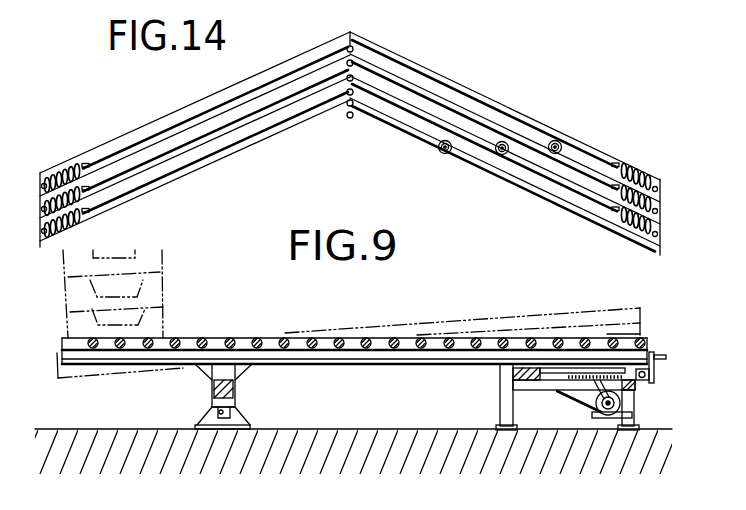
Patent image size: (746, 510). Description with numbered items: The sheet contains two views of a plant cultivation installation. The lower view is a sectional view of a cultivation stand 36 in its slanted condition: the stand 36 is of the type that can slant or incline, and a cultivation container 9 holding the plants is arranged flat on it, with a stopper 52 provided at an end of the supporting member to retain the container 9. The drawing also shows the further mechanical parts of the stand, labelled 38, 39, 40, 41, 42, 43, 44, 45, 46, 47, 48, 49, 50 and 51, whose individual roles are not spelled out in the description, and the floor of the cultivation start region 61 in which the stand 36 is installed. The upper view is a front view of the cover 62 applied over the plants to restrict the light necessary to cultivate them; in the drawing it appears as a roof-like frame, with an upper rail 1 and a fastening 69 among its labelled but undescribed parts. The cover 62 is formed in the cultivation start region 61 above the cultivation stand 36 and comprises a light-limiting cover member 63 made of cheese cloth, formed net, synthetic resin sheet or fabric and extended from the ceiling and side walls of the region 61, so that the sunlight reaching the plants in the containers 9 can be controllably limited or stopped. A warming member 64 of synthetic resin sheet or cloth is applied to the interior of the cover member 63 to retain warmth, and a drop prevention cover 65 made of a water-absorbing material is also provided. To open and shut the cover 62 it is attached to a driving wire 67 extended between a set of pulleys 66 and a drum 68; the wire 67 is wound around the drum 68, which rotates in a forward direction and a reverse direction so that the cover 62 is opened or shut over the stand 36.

In FIG. 14, the upper rail of hook frame 1 is at (428, 72).
In FIG. 14, the cover 62 is at (459, 79).
In FIG. 14, the cover member 63 is at (633, 176).
In FIG. 14, the warming member 64 is at (658, 203).
In FIG. 14, the drop prevention cover 65 is at (627, 228).
In FIG. 14, the pulleys 66 is at (346, 77).
In FIG. 14, the driving wire 67 is at (601, 160).
In FIG. 14, the drum 68 is at (444, 153).
In FIG. 14, the bolt 69 is at (556, 140).
In FIG. 9, the cultivation container 9 is at (163, 303).
In FIG. 9, the cultivation stand 36 is at (647, 332).
In FIG. 9, the base frame 38 is at (637, 397).
In FIG. 9, the bearing block 39 is at (649, 394).
In FIG. 9, the handle 40 is at (655, 369).
In FIG. 9, the lever 41 is at (603, 378).
In FIG. 9, the cam hub 42 is at (612, 405).
In FIG. 9, the cam wheel 43 is at (604, 414).
In FIG. 9, the link arm 44 is at (593, 387).
In FIG. 9, the threaded spindle 45 is at (588, 375).
In FIG. 9, the slide block 46 is at (548, 379).
In FIG. 9, the guide rail 47 is at (544, 366).
In FIG. 9, the support stand 48 is at (205, 425).
In FIG. 9, the conveyor table plate 49 is at (335, 361).
In FIG. 9, the upright post 50 is at (503, 374).
In FIG. 9, the rollers 51 is at (355, 341).
In FIG. 9, the stopper 52 is at (63, 338).
In FIG. 9, the cultivation start region 61 is at (385, 420).